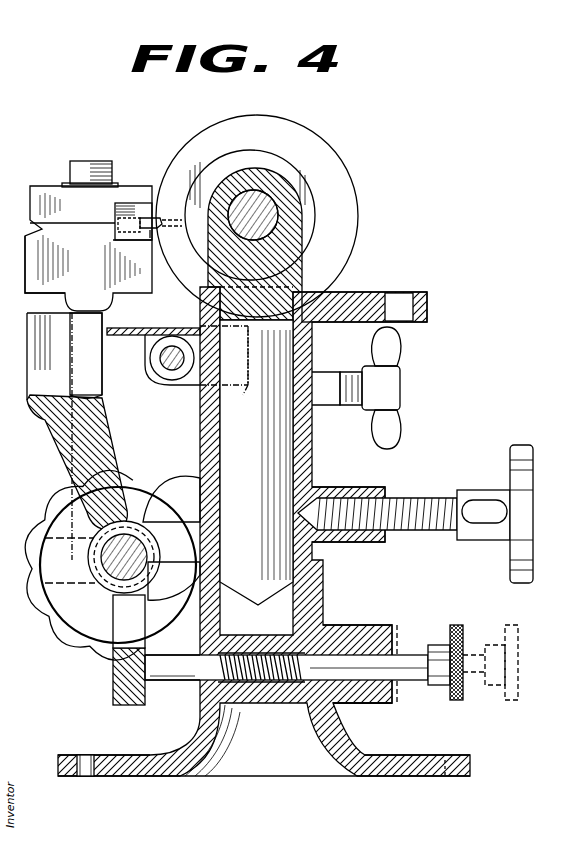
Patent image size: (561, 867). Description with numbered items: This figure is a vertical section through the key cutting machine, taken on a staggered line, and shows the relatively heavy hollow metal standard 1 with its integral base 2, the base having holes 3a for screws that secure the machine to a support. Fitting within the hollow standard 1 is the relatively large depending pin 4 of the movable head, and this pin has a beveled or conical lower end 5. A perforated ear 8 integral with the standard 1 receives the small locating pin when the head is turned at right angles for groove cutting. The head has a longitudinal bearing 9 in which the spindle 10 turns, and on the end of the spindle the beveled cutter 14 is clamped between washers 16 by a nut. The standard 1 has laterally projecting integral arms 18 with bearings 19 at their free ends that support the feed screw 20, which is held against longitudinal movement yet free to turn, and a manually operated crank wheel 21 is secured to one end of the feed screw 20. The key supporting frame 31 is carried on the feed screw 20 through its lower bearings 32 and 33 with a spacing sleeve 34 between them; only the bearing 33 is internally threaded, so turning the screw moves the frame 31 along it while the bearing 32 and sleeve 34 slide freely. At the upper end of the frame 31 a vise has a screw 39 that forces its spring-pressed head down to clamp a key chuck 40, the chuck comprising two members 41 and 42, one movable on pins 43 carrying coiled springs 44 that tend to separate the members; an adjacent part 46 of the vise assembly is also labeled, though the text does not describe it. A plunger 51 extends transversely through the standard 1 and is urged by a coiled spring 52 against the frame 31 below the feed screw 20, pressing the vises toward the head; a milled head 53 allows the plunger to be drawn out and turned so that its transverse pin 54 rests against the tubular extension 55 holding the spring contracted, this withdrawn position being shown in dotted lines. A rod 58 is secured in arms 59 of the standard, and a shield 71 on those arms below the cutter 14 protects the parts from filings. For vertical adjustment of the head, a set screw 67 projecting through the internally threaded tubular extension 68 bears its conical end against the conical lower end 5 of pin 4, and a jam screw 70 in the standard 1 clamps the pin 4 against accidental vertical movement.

The standard 1 is at (215, 420).
The base 2 is at (425, 768).
The holes 3a is at (445, 778).
The pin 4 is at (246, 462).
The beveled lower end 5 is at (300, 205).
The perforated ear 8 is at (427, 295).
The bearing 9 is at (272, 218).
The spindle 10 is at (268, 205).
The cutter 14 is at (303, 158).
The washers 16 is at (40, 245).
The arms 18 is at (183, 570).
The bearings 19 is at (106, 580).
The feed screw 20 is at (145, 540).
The crank wheel 21 is at (94, 657).
The key supporting frame 31 is at (70, 447).
The bearing 32 is at (82, 548).
The bearing 33 is at (36, 372).
The spacing sleeve 34 is at (145, 530).
The screw 39 is at (80, 162).
The key chuck 40 is at (135, 225).
The chuck member 41 is at (143, 204).
The chuck member 42 is at (158, 230).
The pins 43 is at (128, 211).
The coiled springs 44 is at (155, 218).
The block face 46 is at (140, 238).
The plunger 51 is at (177, 667).
The coiled spring 52 is at (296, 685).
The milled head 53 is at (457, 630).
The transverse pin 54 is at (375, 640).
The tubular extension 55 is at (375, 690).
The rod 58 is at (40, 196).
The arms 59 is at (160, 365).
The set screw 67 is at (420, 496).
The tubular extension 68 is at (372, 548).
The jam screw 70 is at (392, 388).
The shield 71 is at (160, 328).